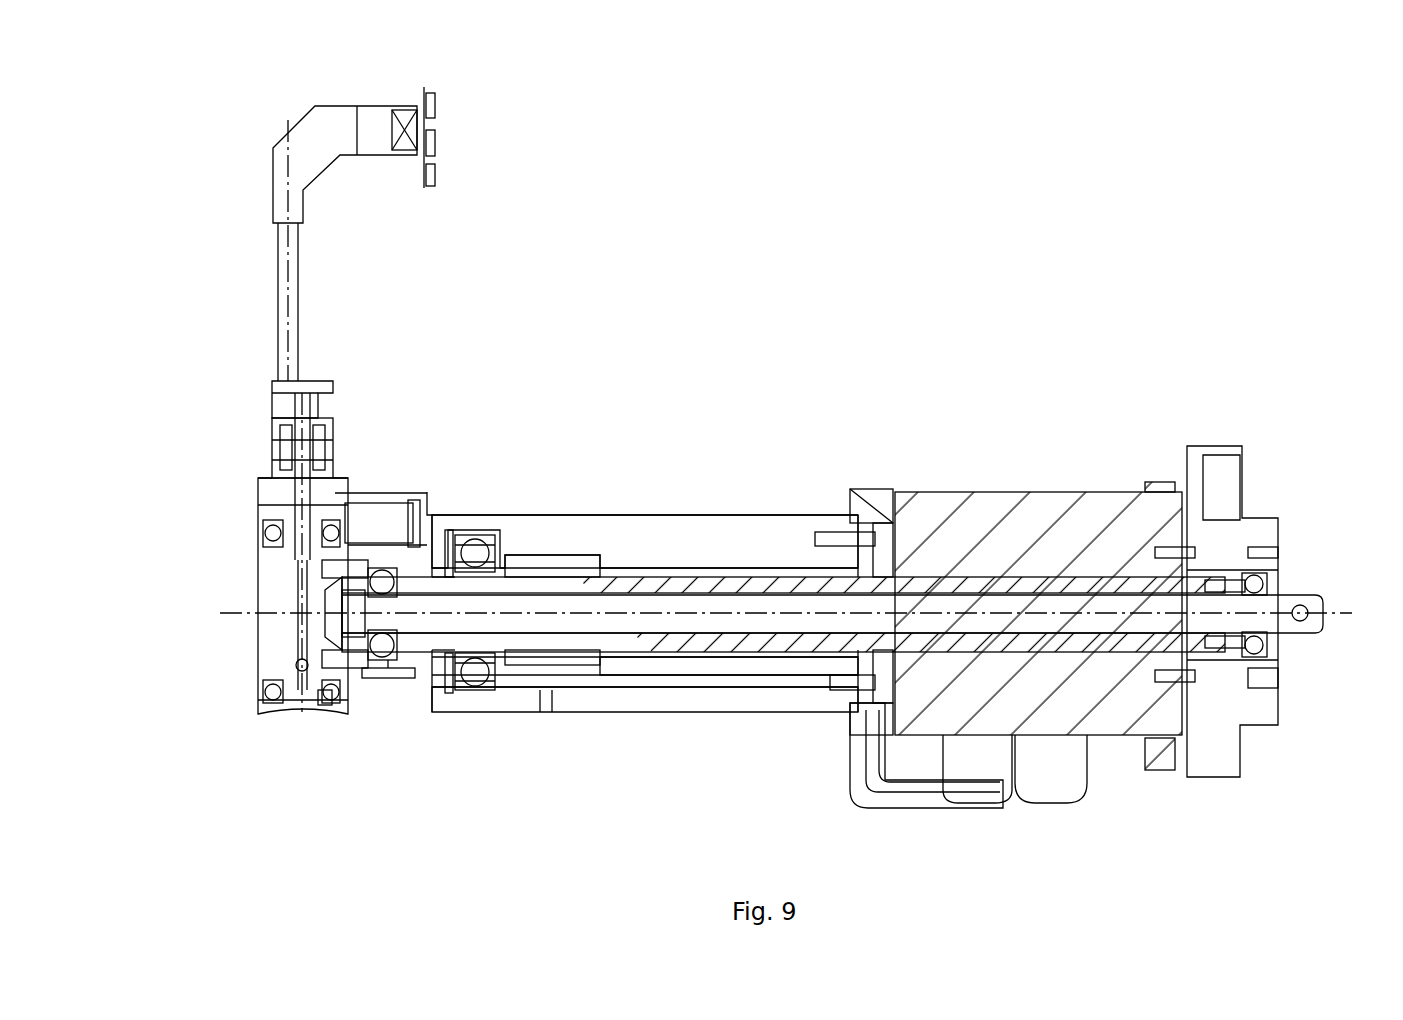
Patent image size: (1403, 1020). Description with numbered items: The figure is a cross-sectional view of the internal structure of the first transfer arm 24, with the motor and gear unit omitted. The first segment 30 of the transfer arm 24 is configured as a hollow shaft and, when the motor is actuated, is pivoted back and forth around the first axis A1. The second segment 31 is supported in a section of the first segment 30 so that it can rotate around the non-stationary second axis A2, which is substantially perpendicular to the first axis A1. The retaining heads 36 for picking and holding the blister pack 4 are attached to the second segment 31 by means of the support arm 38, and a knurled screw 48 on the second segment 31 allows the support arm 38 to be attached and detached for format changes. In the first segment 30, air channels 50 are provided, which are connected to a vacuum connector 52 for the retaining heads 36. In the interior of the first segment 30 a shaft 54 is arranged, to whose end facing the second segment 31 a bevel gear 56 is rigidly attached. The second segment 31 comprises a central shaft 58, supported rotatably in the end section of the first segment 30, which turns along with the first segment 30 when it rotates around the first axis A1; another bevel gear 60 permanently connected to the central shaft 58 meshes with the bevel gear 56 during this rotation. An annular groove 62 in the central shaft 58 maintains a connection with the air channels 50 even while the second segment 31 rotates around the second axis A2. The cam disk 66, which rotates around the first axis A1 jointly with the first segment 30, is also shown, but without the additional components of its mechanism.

The blister pack 4 is at (435, 107).
The first transfer arm 24 is at (832, 176).
The first segment 30 is at (765, 590).
The second segment 31 is at (278, 425).
The retaining head 36 is at (408, 132).
The support arm 38 is at (278, 248).
The knurled screw 48 is at (305, 402).
The air channels 50 is at (625, 685).
The vacuum connector 52 is at (935, 795).
The shaft 54 is at (1030, 600).
The bevel gear 56 is at (338, 650).
The central shaft 58 is at (305, 606).
The bevel gear 60 is at (325, 697).
The annular groove 62 is at (290, 504).
The cam disk 66 is at (1228, 537).
The first axis A1 is at (1286, 553).
The second axis A2 is at (300, 647).